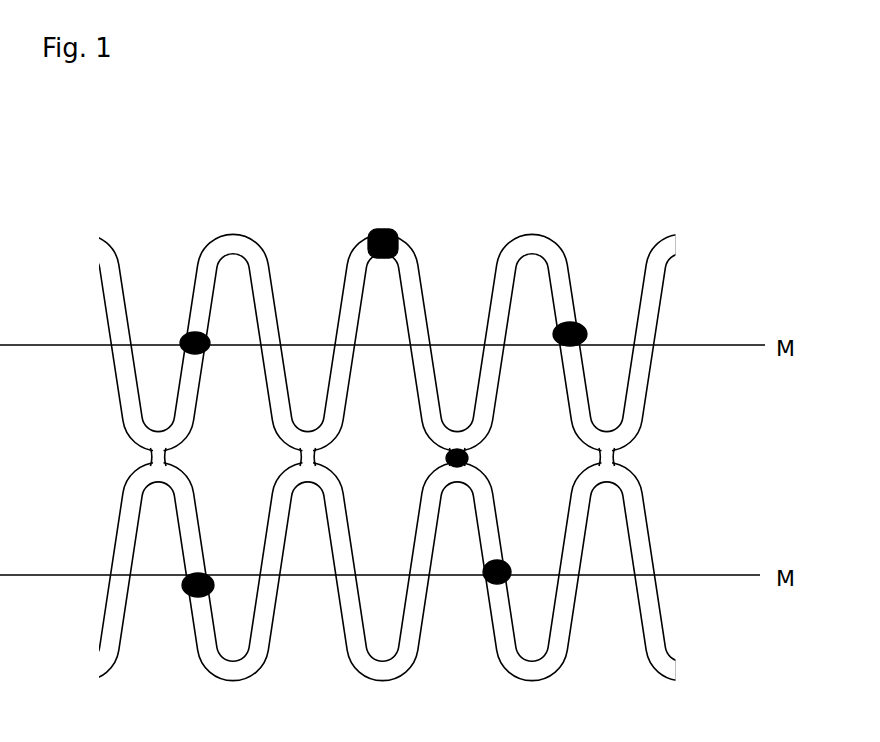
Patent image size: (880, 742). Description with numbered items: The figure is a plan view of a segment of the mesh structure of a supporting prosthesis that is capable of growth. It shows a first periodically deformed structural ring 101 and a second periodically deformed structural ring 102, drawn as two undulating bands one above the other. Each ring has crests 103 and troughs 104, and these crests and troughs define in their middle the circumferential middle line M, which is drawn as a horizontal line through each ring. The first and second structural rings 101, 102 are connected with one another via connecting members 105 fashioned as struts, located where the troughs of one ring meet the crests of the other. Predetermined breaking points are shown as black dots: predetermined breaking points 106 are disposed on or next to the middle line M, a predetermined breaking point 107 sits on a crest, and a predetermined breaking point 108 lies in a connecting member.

The first periodically deformed structural ring 101 is at (655, 303).
The second periodically deformed structural ring 102 is at (638, 530).
The crests 103 is at (232, 246).
The troughs 104 is at (150, 443).
The connecting members 105 is at (150, 458).
The predetermined breaking points 106 is at (206, 352).
The predetermined breaking point 107 is at (392, 229).
The predetermined breaking point 108 is at (472, 454).